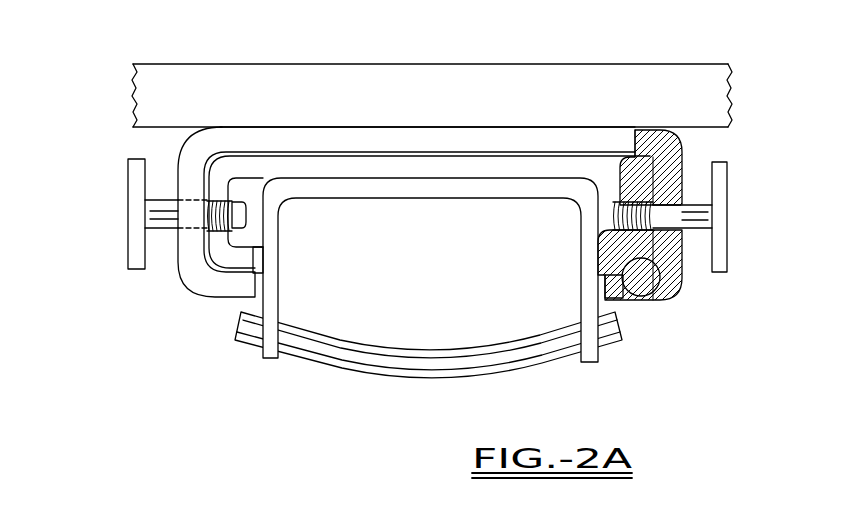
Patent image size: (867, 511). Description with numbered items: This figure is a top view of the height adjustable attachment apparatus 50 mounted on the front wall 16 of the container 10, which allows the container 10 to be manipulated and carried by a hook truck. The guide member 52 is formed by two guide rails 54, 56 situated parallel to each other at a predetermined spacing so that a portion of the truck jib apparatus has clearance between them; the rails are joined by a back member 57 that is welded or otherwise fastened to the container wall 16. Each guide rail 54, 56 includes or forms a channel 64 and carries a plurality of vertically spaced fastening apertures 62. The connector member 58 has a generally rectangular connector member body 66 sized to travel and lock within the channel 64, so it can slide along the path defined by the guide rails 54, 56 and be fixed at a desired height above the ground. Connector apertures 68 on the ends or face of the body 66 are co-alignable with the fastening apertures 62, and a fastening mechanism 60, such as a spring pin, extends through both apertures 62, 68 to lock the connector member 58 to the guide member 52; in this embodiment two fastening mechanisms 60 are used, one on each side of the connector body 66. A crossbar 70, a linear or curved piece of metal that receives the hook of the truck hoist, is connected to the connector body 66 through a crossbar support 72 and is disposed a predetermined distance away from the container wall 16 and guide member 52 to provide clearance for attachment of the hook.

The container 10 is at (203, 62).
The front wall 16 is at (347, 77).
The height adjustable attachment apparatus 50 is at (200, 357).
The guide member 52 is at (418, 128).
The guide rail 54 is at (190, 268).
The guide rail 56 is at (667, 281).
The back member 57 is at (505, 135).
The connector member 58 is at (438, 196).
The fastening mechanism 60 is at (128, 234).
The fastening aperture 62 is at (683, 200).
The channel 64 is at (630, 300).
The connector member body 66 is at (570, 167).
The connector aperture 68 is at (633, 220).
The crossbar 70 is at (412, 372).
The crossbar support 72 is at (265, 358).